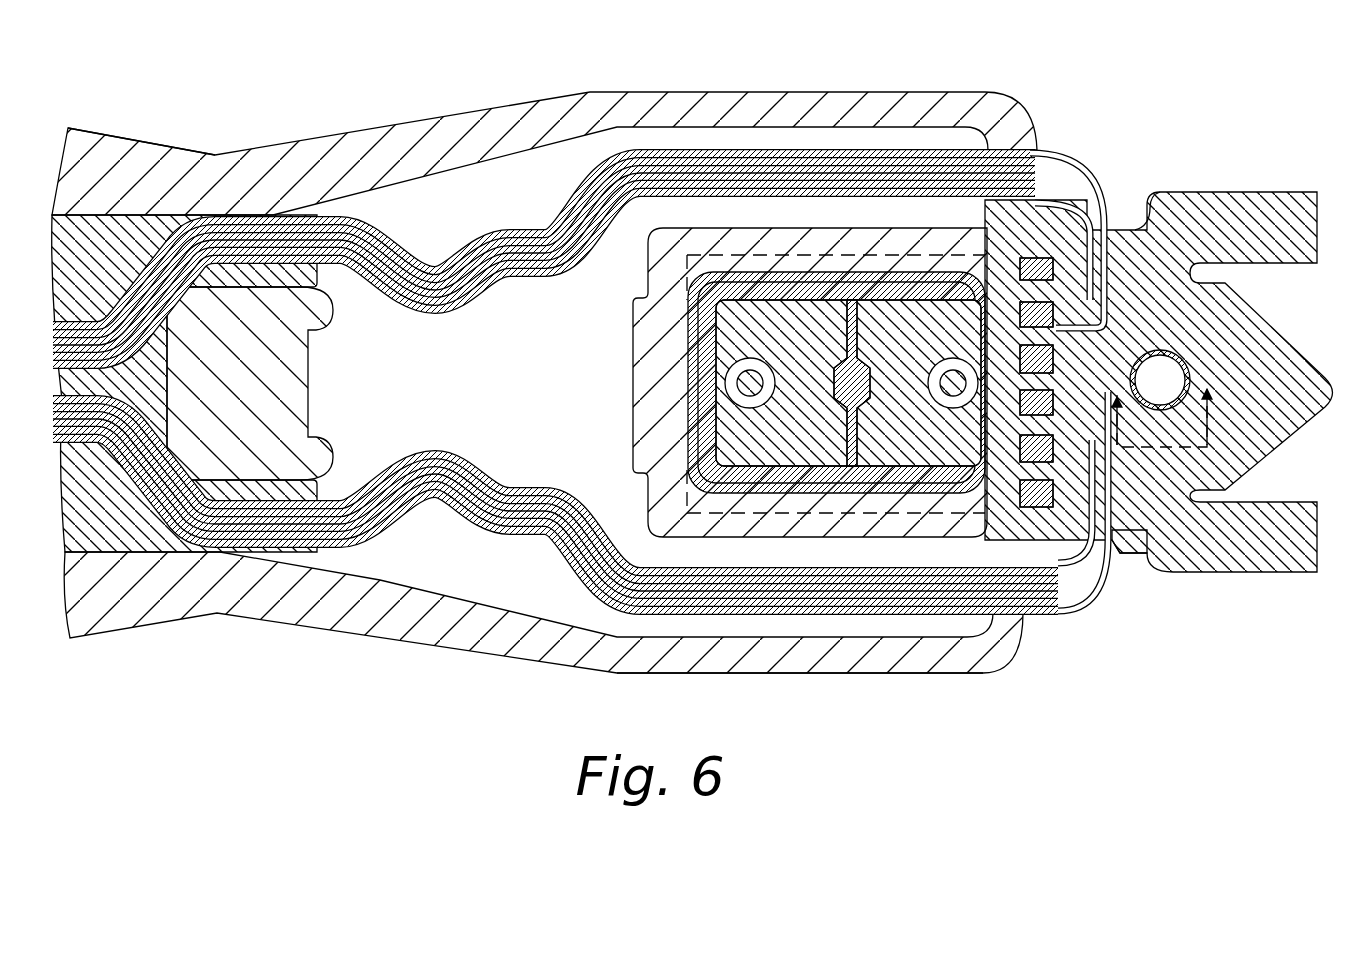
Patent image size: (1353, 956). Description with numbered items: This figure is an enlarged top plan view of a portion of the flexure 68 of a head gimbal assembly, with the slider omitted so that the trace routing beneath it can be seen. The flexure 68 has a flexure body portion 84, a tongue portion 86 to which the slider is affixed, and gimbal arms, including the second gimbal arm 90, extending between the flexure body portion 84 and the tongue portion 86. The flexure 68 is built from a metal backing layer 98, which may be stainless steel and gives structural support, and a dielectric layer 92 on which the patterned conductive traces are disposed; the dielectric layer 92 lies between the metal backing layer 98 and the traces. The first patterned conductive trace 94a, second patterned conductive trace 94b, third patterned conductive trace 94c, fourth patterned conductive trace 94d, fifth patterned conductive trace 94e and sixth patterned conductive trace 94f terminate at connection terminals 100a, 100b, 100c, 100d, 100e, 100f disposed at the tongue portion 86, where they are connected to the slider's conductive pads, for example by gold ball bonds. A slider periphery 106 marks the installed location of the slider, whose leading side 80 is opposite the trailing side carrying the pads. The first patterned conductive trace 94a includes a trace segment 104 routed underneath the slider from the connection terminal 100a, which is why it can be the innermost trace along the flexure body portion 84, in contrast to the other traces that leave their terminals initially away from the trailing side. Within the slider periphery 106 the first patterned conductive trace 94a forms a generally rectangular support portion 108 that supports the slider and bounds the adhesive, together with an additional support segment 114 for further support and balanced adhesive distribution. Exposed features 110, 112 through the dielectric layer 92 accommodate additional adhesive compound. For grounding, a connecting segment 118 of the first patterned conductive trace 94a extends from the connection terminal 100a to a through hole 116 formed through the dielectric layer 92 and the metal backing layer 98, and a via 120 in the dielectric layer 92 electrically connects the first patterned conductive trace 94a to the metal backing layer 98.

The flexure 68 is at (215, 105).
The leading side 80 is at (797, 92).
The flexure body portion 84 is at (122, 142).
The tongue portion 86 is at (648, 290).
The second gimbal arm 90 is at (710, 674).
The dielectric layer 92 is at (107, 533).
The first patterned conductive trace 94a is at (383, 300).
The second patterned conductive trace 94b is at (583, 197).
The third patterned conductive trace 94c is at (402, 517).
The fourth patterned conductive trace 94d is at (510, 252).
The fifth patterned conductive trace 94e is at (570, 537).
The sixth patterned conductive trace 94f is at (388, 470).
The metal backing layer 98 is at (835, 674).
The connection terminal 100a is at (1057, 355).
The connection terminal 100b is at (1122, 230).
The connection terminal 100c is at (1145, 505).
The connection terminal 100d is at (1042, 258).
The connection terminal 100e is at (1127, 533).
The connection terminal 100f is at (1077, 598).
The trace segment 104 is at (957, 310).
The slider periphery 106 is at (678, 492).
The support portion 108 is at (696, 327).
The exposed feature 110 is at (745, 385).
The exposed feature 112 is at (950, 400).
The additional support segment 114 is at (848, 330).
The through hole 116 is at (1190, 362).
The connecting segment 118 is at (1062, 375).
The via 120 is at (1218, 448).